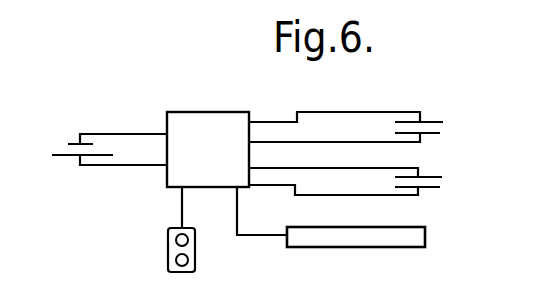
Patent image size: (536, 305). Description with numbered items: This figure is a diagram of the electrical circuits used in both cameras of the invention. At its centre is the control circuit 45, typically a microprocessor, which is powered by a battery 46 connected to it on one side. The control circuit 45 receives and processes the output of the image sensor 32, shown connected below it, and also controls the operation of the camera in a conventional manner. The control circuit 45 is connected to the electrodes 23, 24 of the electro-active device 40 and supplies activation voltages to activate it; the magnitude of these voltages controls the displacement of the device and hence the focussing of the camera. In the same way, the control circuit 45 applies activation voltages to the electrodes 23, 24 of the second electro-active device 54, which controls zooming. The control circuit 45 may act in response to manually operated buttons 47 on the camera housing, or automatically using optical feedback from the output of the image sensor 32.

The control circuit 45 is at (198, 133).
The battery 46 is at (66, 157).
The manually operated buttons 47 is at (172, 250).
The image sensor 32 is at (365, 240).
The second electro-active device 54 is at (445, 130).
The electro-active device 40 is at (445, 185).
The electrode 23 is at (430, 122).
The electrode 24 is at (442, 135).